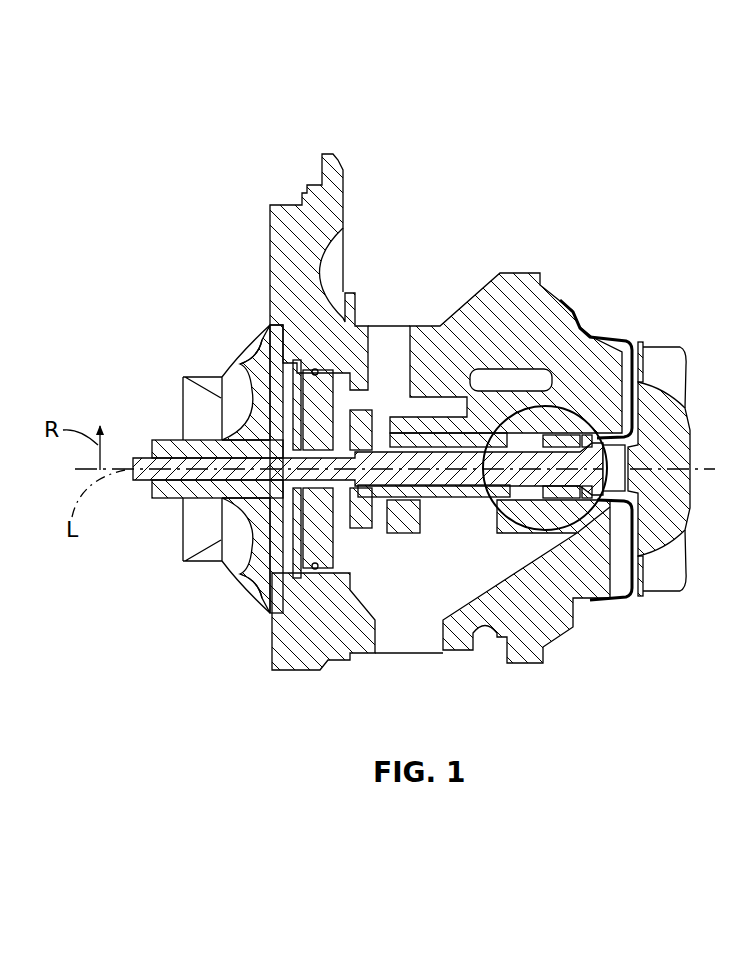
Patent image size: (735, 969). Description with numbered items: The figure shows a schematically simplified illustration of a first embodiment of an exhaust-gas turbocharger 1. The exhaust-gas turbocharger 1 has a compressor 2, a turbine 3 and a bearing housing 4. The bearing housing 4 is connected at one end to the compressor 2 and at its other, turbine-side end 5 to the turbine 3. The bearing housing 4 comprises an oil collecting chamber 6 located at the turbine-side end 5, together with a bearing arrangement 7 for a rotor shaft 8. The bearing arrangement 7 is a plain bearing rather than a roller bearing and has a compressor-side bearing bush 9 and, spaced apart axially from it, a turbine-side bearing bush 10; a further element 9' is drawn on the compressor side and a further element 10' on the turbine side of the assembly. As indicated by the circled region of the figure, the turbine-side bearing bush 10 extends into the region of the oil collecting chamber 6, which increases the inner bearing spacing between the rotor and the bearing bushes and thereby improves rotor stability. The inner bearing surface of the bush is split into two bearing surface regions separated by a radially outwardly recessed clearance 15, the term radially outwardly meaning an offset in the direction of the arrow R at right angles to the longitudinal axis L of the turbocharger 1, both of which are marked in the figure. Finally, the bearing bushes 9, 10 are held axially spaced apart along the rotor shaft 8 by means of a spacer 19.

The exhaust-gas turbocharger 1 is at (399, 224).
The compressor 2 is at (187, 358).
The turbine 3 is at (663, 335).
The bearing housing 4 is at (452, 330).
The turbine-side end 5 is at (600, 438).
The oil collecting chamber 6 is at (551, 430).
The bearing arrangement 7 is at (389, 502).
The rotor shaft 8 is at (255, 472).
The compressor-side bearing bush 9 is at (223, 602).
The compressor wheel hub contour 9' is at (241, 309).
The turbine-side bearing bush 10 is at (633, 576).
The heat shield 10' is at (596, 400).
The clearance 15 is at (558, 502).
The spacer 19 is at (443, 430).